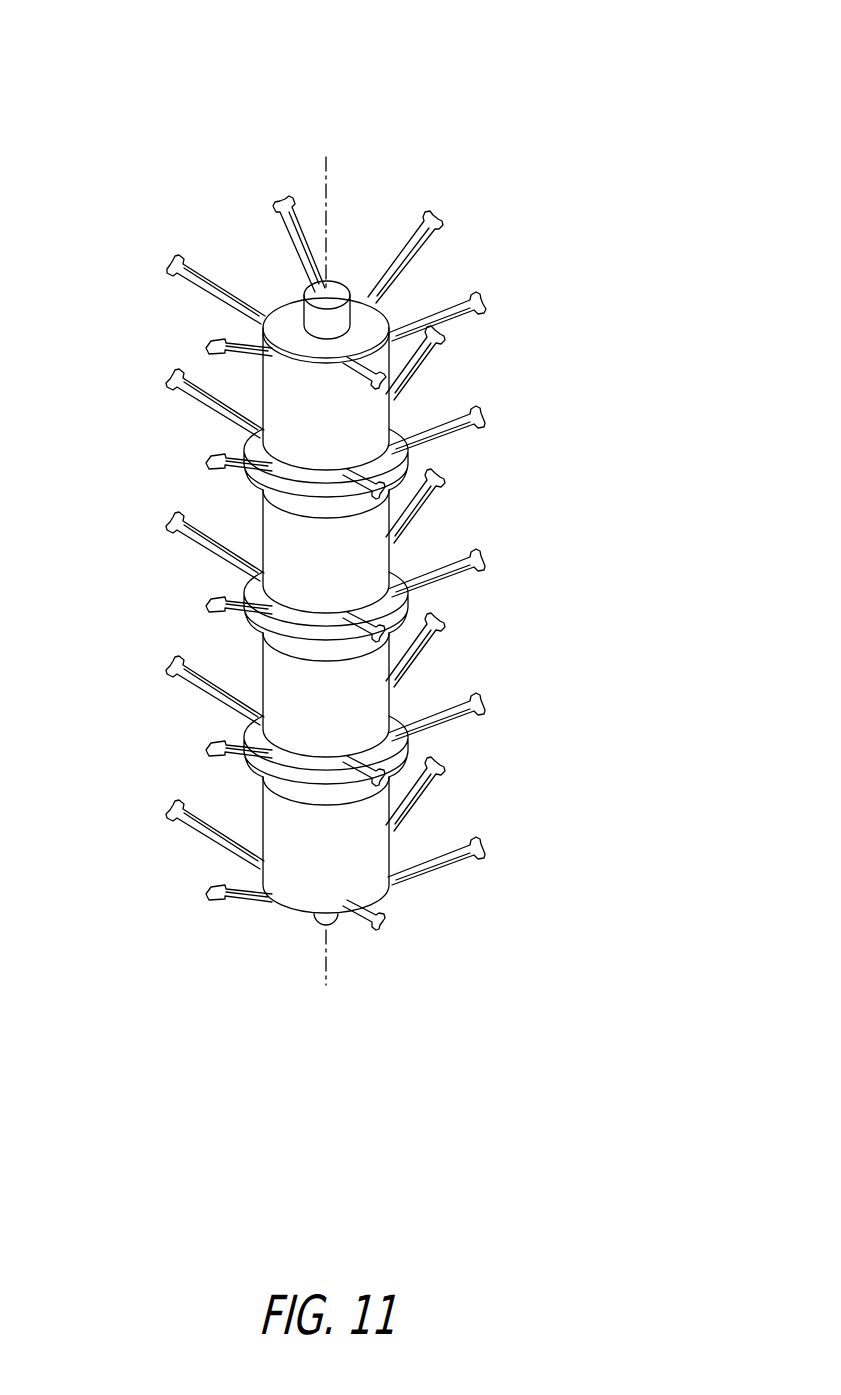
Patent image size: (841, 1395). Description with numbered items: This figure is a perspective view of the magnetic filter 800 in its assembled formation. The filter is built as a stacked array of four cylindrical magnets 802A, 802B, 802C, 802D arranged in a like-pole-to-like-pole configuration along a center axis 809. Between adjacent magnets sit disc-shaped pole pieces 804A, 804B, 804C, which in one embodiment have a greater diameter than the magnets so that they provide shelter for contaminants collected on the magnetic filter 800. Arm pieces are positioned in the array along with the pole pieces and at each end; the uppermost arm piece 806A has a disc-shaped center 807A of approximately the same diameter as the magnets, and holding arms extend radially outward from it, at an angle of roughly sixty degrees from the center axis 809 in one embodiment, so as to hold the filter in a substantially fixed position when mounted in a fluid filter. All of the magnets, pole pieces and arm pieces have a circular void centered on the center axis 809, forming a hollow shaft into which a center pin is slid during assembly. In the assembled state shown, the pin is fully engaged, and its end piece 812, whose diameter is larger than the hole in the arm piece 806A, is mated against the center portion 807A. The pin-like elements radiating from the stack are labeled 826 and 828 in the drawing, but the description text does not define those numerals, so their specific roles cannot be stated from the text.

The magnetic filter 800 is at (500, 78).
The magnet 802A is at (376, 437).
The magnet 802B is at (374, 557).
The magnet 802C is at (372, 697).
The magnet 802D is at (372, 855).
The pole piece 804A is at (258, 494).
The pole piece 804B is at (250, 640).
The pole piece 804C is at (250, 778).
The arm piece 806A is at (166, 303).
The disc shaped center 807A is at (363, 316).
The center axis 809 is at (328, 197).
The end piece 812 is at (333, 294).
The pin 826 is at (290, 198).
The pin shaft 828 is at (228, 292).